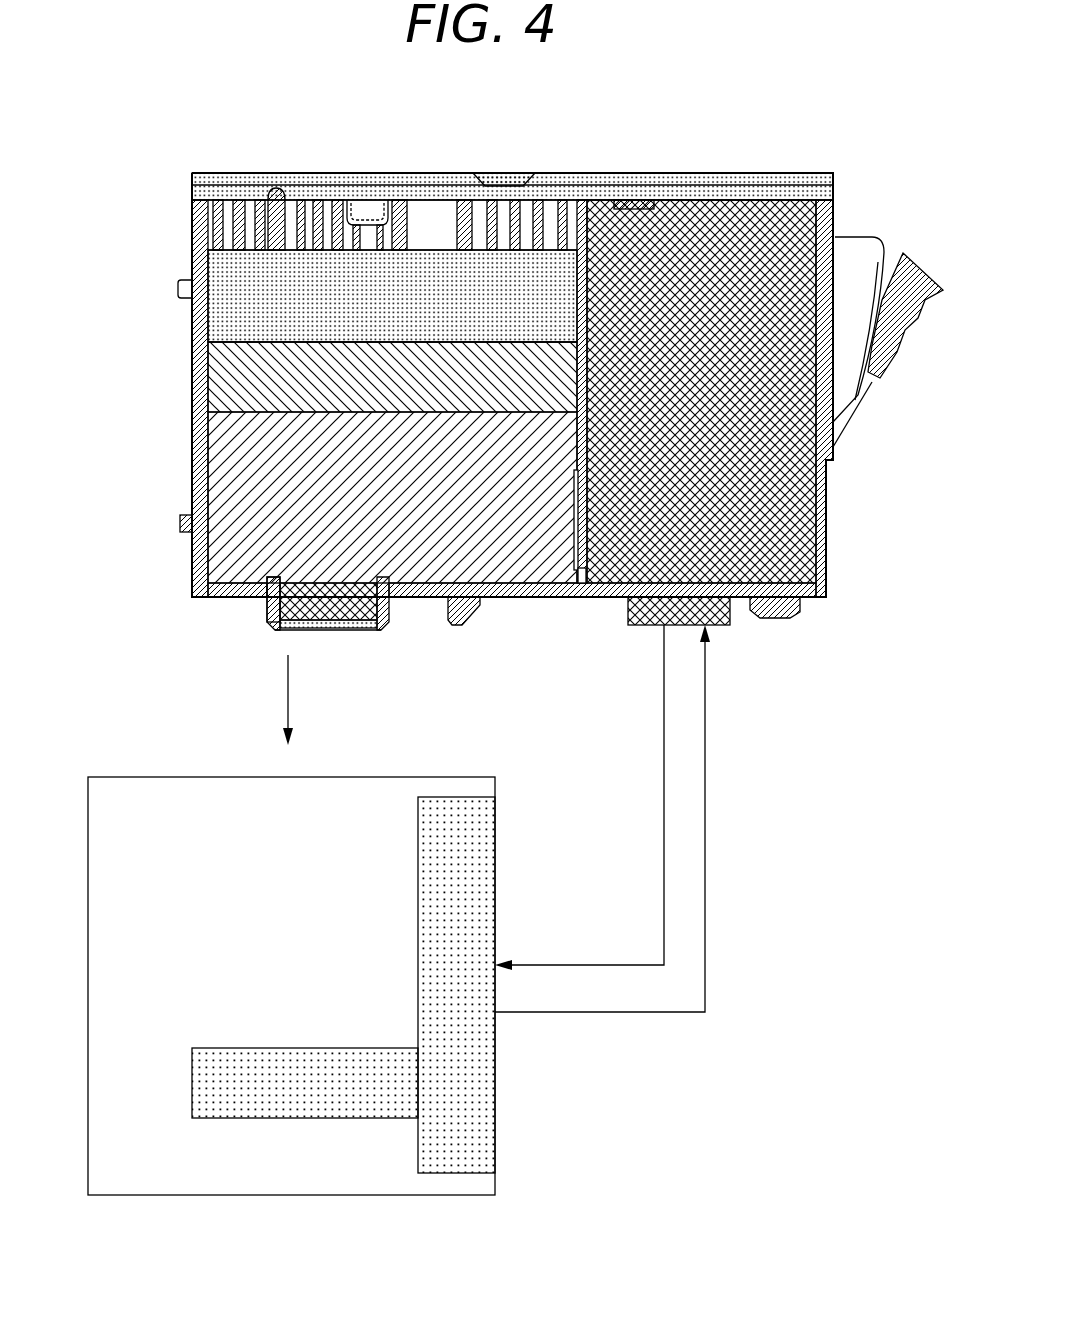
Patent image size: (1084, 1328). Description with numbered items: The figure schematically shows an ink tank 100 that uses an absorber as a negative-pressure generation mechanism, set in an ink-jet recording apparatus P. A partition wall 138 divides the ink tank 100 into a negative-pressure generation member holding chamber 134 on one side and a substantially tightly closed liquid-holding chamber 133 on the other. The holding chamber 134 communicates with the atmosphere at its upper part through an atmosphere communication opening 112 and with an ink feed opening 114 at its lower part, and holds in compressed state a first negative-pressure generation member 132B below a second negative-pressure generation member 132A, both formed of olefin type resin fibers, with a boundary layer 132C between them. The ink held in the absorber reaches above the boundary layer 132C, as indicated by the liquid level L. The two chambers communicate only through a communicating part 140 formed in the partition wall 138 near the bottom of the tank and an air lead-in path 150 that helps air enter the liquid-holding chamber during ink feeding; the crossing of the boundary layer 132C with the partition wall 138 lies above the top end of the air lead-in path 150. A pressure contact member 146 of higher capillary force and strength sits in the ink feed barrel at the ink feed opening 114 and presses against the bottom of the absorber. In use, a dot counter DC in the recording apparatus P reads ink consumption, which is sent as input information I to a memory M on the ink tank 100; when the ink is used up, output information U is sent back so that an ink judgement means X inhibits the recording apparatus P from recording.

The ink tank 100 is at (178, 530).
The atmosphere communication opening 112 is at (500, 173).
The ink feed opening 114 is at (267, 617).
The second negative-pressure generation member 132A is at (230, 327).
The first negative-pressure generation member 132B is at (223, 462).
The boundary layer 132C is at (230, 400).
The ink accommodating chamber 133 is at (813, 513).
The negative-pressure generation member holding chamber 134 is at (220, 367).
The partition wall 138 is at (577, 297).
The communicating part 140 is at (580, 580).
The pressure contact member 146 is at (332, 613).
The air lead-in path 150 is at (575, 533).
The liquid level L is at (277, 340).
The memory M is at (730, 623).
The ink-jet recording apparatus P is at (187, 790).
The ink judgement means X is at (483, 1145).
The dot counter DC is at (318, 1118).
The output information U is at (664, 838).
The input information I is at (705, 955).